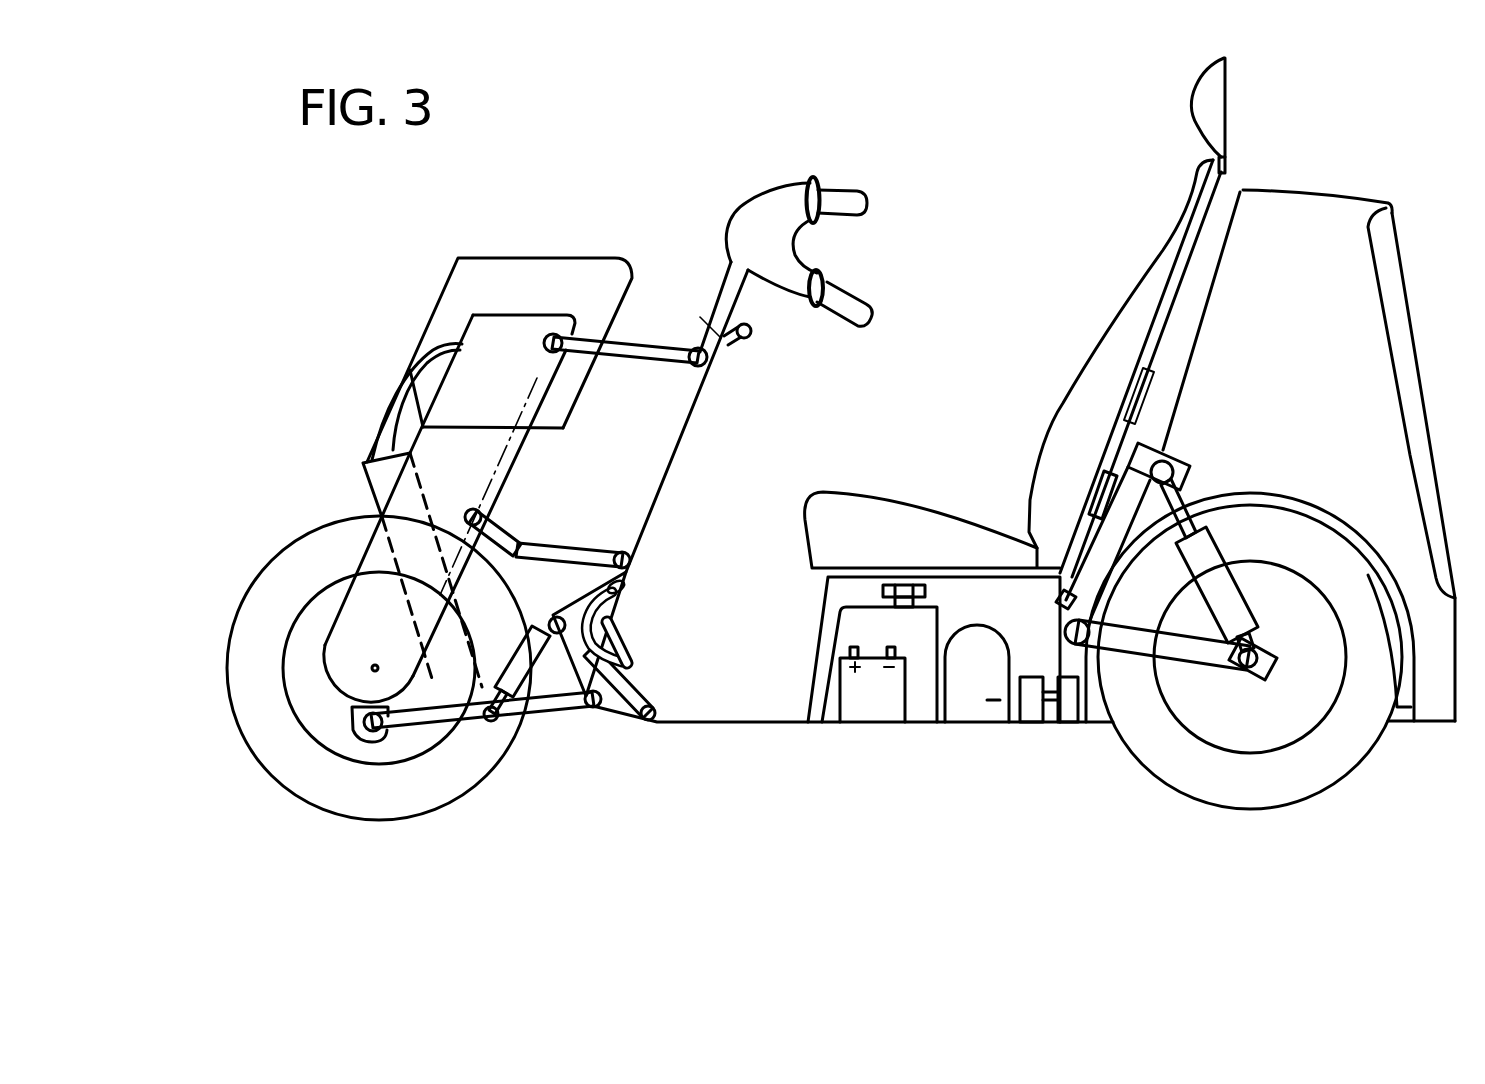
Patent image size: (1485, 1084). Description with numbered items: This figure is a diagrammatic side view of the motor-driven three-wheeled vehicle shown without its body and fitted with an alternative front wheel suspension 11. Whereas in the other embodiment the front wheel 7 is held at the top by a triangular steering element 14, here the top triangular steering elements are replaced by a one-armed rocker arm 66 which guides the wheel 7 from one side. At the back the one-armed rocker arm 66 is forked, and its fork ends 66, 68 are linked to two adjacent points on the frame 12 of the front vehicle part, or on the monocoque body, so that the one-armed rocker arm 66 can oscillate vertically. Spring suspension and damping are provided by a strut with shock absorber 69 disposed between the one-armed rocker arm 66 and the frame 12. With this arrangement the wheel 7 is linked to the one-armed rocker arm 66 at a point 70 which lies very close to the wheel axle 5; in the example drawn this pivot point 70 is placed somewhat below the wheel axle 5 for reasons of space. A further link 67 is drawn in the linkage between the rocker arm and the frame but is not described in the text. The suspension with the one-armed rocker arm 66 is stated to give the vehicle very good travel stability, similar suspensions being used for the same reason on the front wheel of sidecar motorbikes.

The front wheel suspension 11 is at (306, 484).
The triangular steering element 14 is at (547, 547).
The front wheel 7 is at (270, 730).
The wheel axle 5 is at (374, 668).
The point 70 is at (362, 735).
The one-armed rocker arm 66 is at (410, 723).
The shock absorber 67 is at (570, 695).
The fork end 68 is at (575, 706).
The strut with shock absorber 69 is at (586, 686).
The frame 12 is at (702, 723).